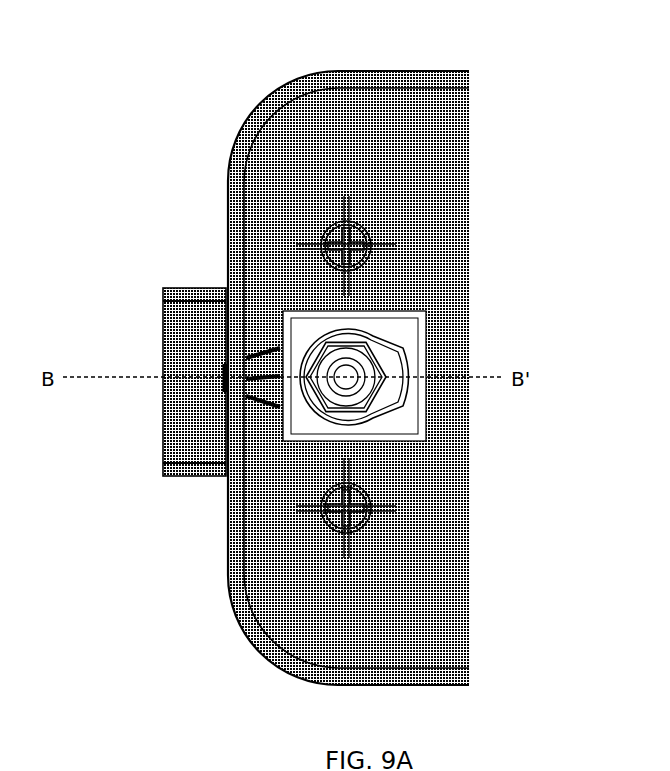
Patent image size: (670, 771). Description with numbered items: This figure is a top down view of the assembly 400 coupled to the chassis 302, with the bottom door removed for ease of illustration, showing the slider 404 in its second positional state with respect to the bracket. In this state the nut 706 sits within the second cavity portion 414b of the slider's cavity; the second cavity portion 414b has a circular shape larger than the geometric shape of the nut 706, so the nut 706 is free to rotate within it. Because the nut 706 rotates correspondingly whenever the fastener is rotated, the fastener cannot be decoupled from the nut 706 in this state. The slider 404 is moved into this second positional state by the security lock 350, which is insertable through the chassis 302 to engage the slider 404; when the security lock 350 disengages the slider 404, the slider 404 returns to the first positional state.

The chassis 302 is at (453, 137).
The assembly 400 is at (430, 272).
The security lock 350 is at (155, 282).
The slider 404 is at (268, 300).
The nut 706 is at (368, 345).
The second cavity portion 414b is at (362, 418).